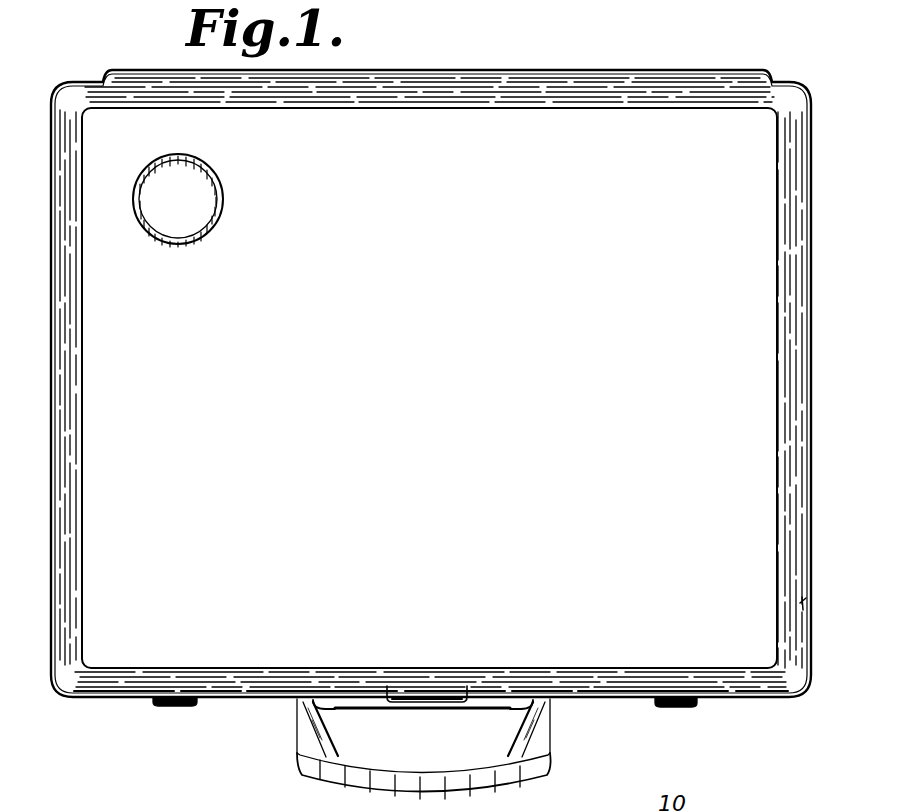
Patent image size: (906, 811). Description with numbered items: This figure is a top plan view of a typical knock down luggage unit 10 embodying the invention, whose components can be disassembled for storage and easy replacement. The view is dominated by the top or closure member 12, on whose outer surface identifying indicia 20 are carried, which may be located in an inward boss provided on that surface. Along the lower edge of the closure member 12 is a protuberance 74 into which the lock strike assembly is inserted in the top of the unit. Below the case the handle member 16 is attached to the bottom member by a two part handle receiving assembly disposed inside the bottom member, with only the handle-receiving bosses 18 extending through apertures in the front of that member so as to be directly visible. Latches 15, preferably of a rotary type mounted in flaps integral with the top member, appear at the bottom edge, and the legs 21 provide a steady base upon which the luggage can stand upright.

The luggage unit 10 is at (67, 64).
The top or closure member 12 is at (717, 122).
The latches 15 is at (172, 708).
The handle member 16 is at (406, 786).
The handle-receiving bosses 18 is at (320, 704).
The identifying indicia 20 is at (185, 215).
The legs 21 is at (443, 78).
The protuberance 74 is at (423, 690).